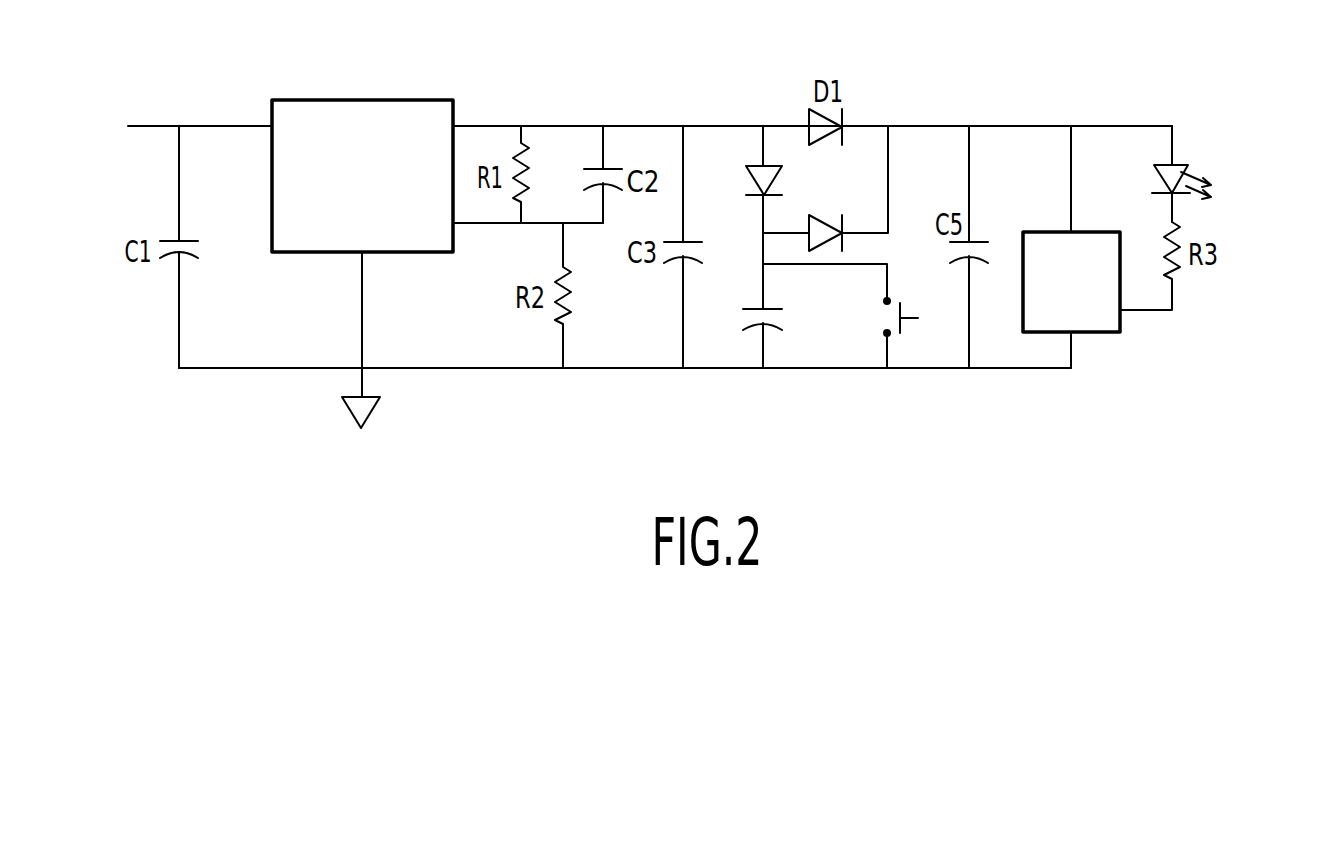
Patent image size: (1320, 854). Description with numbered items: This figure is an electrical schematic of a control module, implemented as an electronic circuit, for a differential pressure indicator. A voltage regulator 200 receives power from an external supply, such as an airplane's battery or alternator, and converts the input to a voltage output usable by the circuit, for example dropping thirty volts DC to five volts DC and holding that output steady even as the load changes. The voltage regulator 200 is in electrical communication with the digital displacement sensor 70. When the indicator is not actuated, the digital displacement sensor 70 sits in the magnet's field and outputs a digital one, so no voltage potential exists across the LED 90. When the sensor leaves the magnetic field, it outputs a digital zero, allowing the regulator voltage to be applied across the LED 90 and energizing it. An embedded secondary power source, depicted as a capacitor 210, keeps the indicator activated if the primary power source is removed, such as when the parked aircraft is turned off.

The voltage regulator 200 is at (362, 113).
The capacitor 210 is at (772, 330).
The digital displacement sensor 70 is at (1098, 320).
The LED 90 is at (1193, 158).